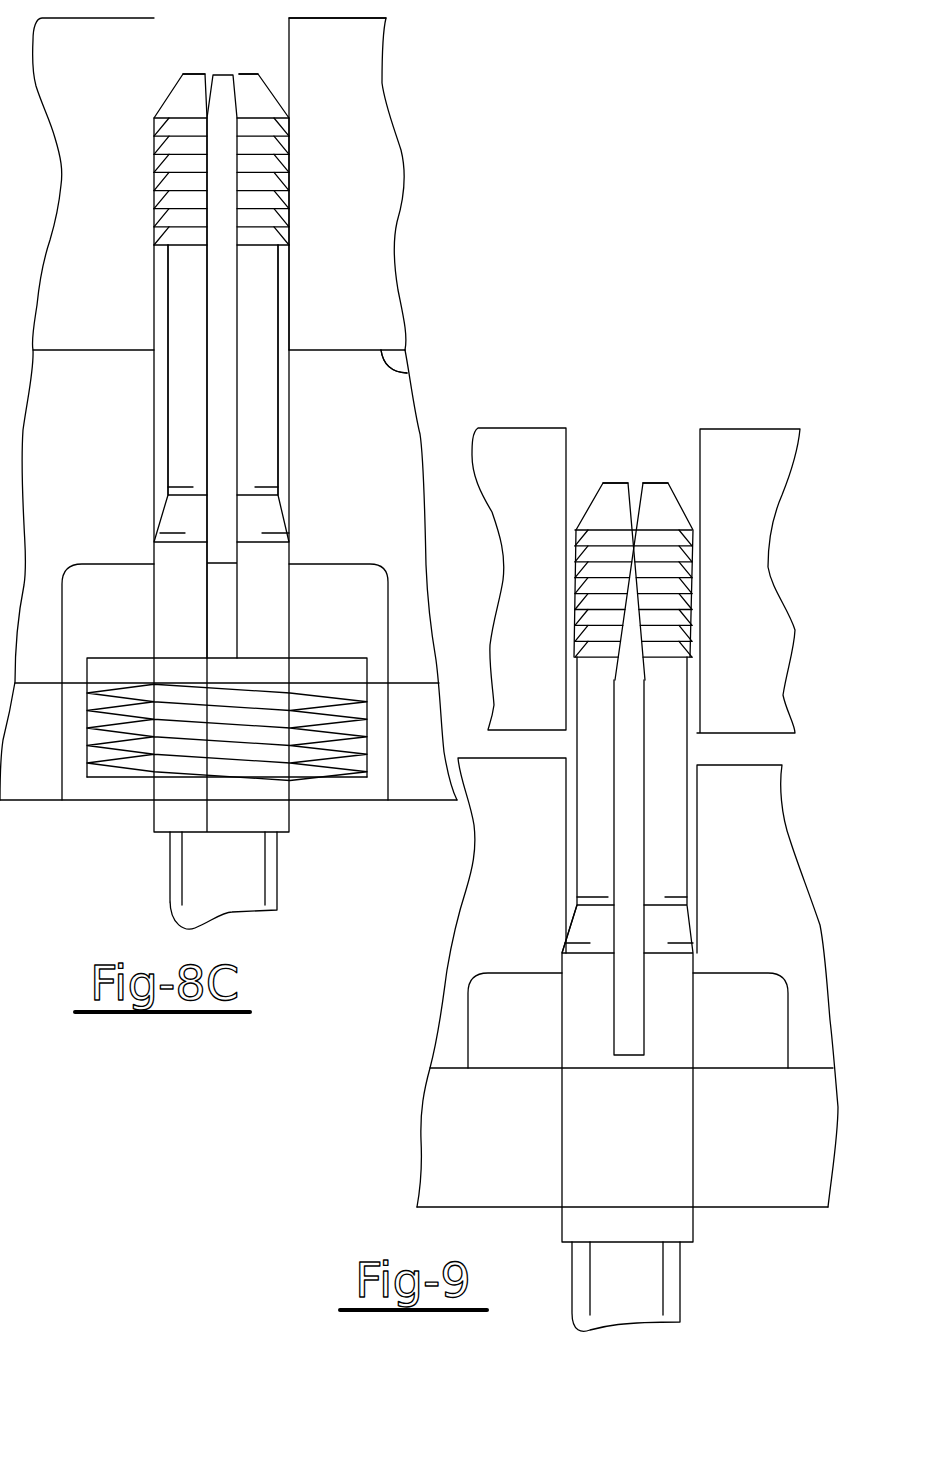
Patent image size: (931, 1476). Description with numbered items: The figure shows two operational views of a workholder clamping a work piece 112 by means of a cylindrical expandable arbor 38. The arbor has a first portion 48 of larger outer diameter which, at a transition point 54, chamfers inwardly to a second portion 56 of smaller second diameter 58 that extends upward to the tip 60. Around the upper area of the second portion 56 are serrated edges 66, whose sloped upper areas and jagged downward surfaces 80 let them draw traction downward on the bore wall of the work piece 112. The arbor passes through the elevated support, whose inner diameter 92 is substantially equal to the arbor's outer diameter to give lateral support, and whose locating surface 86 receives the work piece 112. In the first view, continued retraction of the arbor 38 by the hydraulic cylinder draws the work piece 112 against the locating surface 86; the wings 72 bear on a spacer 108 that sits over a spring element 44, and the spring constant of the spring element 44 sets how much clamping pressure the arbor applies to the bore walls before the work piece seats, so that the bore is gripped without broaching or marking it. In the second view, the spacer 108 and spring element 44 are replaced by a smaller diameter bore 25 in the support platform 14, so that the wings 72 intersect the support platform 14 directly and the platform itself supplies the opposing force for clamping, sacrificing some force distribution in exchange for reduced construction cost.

In FIG. 9, the support platform 14 is at (440, 1127).
In FIG. 9, the smaller diameter bore 25 is at (727, 1162).
In FIG. 8C, the cylindrical expandable arbor 38 is at (262, 473).
In FIG. 9, the cylindrical expandable arbor 38 is at (655, 872).
In FIG. 8C, the spring element 44 is at (367, 738).
In FIG. 8C, the first portion 48 is at (263, 583).
In FIG. 9, the transition point 54 is at (565, 947).
In FIG. 8C, the second portion 56 is at (262, 387).
In FIG. 9, the second portion 56 is at (665, 813).
In FIG. 9, the second diameter 58 is at (545, 748).
In FIG. 8C, the tip 60 is at (203, 74).
In FIG. 9, the tip 60 is at (620, 483).
In FIG. 8C, the serrated edges 66 is at (284, 163).
In FIG. 9, the serrated edges 66 is at (680, 602).
In FIG. 8C, the wings 72 is at (222, 628).
In FIG. 9, the wings 72 is at (628, 1027).
In FIG. 8C, the thread teeth 80 is at (162, 174).
In FIG. 9, the thread teeth 80 is at (574, 615).
In FIG. 8C, the locating surface 86 is at (406, 375).
In FIG. 8C, the inner diameter 92 is at (112, 455).
In FIG. 8C, the spacer 108 is at (345, 672).
In FIG. 8C, the work piece 112 is at (383, 293).
In FIG. 9, the work piece 112 is at (513, 532).